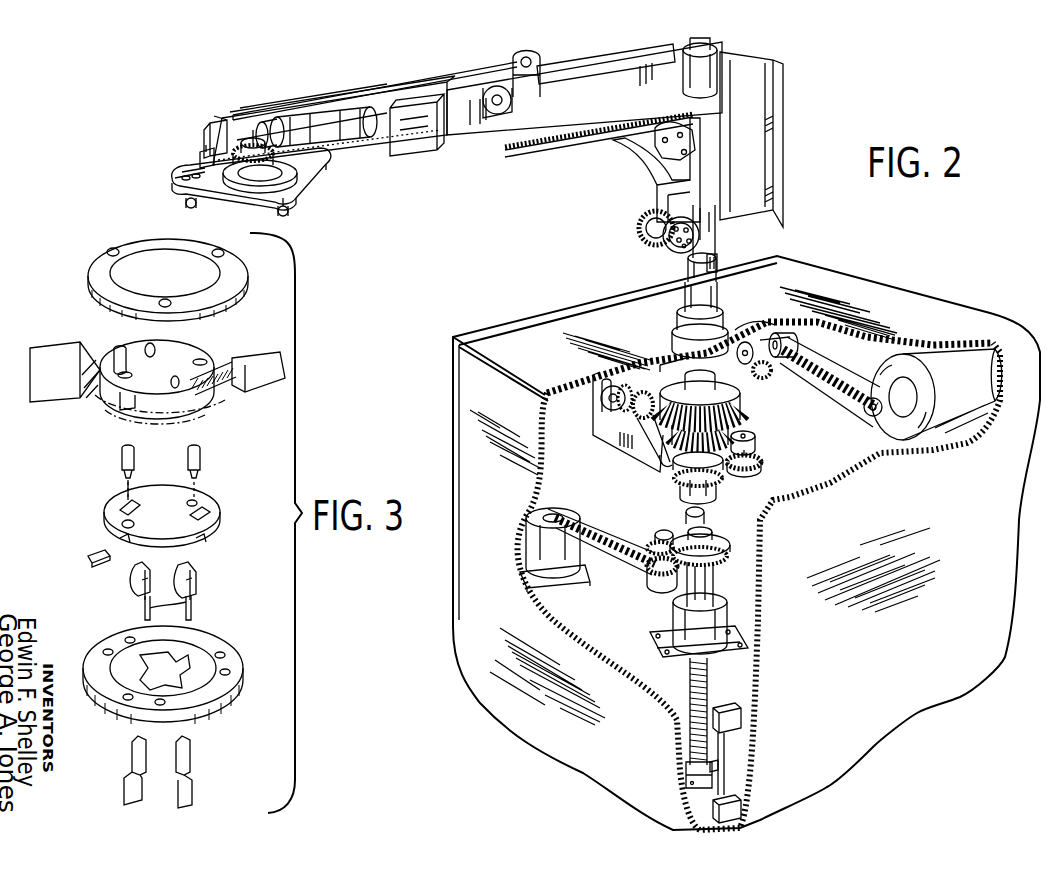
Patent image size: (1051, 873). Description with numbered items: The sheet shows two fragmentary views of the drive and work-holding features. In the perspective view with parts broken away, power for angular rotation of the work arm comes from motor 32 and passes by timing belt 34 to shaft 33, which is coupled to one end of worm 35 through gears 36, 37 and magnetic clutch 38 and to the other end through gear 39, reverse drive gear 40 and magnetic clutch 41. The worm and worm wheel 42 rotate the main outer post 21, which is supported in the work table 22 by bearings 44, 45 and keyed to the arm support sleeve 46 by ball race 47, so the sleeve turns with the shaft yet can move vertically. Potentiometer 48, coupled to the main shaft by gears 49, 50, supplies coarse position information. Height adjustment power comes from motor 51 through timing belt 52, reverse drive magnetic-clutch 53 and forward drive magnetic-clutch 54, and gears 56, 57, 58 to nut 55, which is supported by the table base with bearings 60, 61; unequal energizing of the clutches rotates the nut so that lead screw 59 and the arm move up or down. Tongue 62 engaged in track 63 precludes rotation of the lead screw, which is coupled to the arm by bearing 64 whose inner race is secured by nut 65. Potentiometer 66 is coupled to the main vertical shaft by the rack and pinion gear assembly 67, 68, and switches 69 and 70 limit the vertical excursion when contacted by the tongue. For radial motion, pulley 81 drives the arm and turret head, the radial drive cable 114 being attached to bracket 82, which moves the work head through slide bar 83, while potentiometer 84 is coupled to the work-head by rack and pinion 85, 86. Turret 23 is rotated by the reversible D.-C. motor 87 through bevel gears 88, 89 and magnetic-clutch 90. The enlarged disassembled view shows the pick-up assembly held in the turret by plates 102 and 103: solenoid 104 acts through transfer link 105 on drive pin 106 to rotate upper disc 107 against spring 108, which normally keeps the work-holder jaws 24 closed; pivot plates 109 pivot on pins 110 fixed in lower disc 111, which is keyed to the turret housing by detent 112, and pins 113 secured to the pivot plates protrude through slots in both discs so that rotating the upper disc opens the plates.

In FIG. 2, the main outer post 21 is at (720, 302).
In FIG. 2, the work table 22 is at (905, 298).
In FIG. 2, the turret 23 is at (316, 168).
In FIG. 2, the work-holder jaws 24 is at (290, 212).
In FIG. 3, the work-holder jaws 24 is at (192, 782).
In FIG. 2, the motor 32 is at (975, 385).
In FIG. 2, the shaft 33 is at (775, 360).
In FIG. 2, the timing belt 34 is at (835, 395).
In FIG. 2, the worm 35 is at (734, 404).
In FIG. 2, the gear 36 is at (618, 384).
In FIG. 2, the gear 37 is at (636, 422).
In FIG. 2, the magnetic clutch 38 is at (605, 412).
In FIG. 2, the gear 39 is at (766, 378).
In FIG. 2, the reverse drive gear 40 is at (754, 332).
In FIG. 2, the magnetic clutch 41 is at (745, 342).
In FIG. 2, the worm wheel 42 is at (736, 428).
In FIG. 2, the bearing 44 is at (724, 490).
In FIG. 2, the bearing 45 is at (676, 330).
In FIG. 2, the arm support sleeve 46 is at (718, 246).
In FIG. 2, the ball race 47 is at (718, 264).
In FIG. 2, the potentiometer 48 is at (758, 443).
In FIG. 2, the gear 49 is at (680, 478).
In FIG. 2, the gear 50 is at (763, 467).
In FIG. 2, the motor 51 is at (523, 545).
In FIG. 2, the timing belt 52 is at (585, 535).
In FIG. 2, the reverse drive magnetic-clutch 53 is at (661, 538).
In FIG. 2, the forward drive magnetic-clutch 54 is at (650, 552).
In FIG. 2, the nut 55 is at (720, 567).
In FIG. 2, the gear 56 is at (688, 525).
In FIG. 2, the gear 57 is at (648, 580).
In FIG. 2, the gear 58 is at (718, 542).
In FIG. 2, the lead screw 59 is at (708, 690).
In FIG. 2, the bearing 60 is at (710, 528).
In FIG. 2, the bearing 61 is at (716, 570).
In FIG. 2, the tongue 62 is at (718, 766).
In FIG. 2, the track 63 is at (726, 742).
In FIG. 2, the bearing 64 is at (722, 72).
In FIG. 2, the nut 65 is at (688, 58).
In FIG. 2, the potentiometer 66 is at (640, 230).
In FIG. 2, the rack 67 is at (686, 285).
In FIG. 2, the pinion gear 68 is at (664, 245).
In FIG. 2, the switch 69 is at (738, 716).
In FIG. 2, the switch 70 is at (738, 803).
In FIG. 2, the pulley 81 is at (485, 85).
In FIG. 2, the bracket 82 is at (520, 60).
In FIG. 2, the slide bar 83 is at (268, 116).
In FIG. 2, the potentiometer 84 is at (660, 158).
In FIG. 2, the rack 85 is at (595, 143).
In FIG. 2, the pinion 86 is at (695, 130).
In FIG. 2, the reversible D.-C. motor 87 is at (332, 100).
In FIG. 2, the bevel gear 88 is at (228, 125).
In FIG. 2, the bevel gear 89 is at (260, 122).
In FIG. 2, the magnetic-clutch 90 is at (305, 117).
In FIG. 3, the plate 102 is at (82, 278).
In FIG. 3, the plate 103 is at (212, 642).
In FIG. 2, the solenoid 104 is at (412, 133).
In FIG. 2, the transfer link 105 is at (200, 158).
In FIG. 2, the drive pin 106 is at (172, 180).
In FIG. 3, the drive pin 106 is at (114, 345).
In FIG. 3, the upper disc 107 is at (178, 352).
In FIG. 3, the spring 108 is at (230, 358).
In FIG. 3, the pivot plate 109 is at (146, 612).
In FIG. 3, the pin 110 is at (186, 570).
In FIG. 3, the lower disc 111 is at (196, 508).
In FIG. 3, the detent 112 is at (92, 552).
In FIG. 3, the pin 113 is at (186, 456).
In FIG. 2, the radial drive cable 114 is at (575, 68).